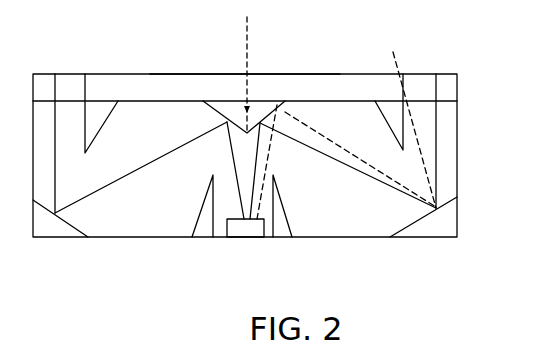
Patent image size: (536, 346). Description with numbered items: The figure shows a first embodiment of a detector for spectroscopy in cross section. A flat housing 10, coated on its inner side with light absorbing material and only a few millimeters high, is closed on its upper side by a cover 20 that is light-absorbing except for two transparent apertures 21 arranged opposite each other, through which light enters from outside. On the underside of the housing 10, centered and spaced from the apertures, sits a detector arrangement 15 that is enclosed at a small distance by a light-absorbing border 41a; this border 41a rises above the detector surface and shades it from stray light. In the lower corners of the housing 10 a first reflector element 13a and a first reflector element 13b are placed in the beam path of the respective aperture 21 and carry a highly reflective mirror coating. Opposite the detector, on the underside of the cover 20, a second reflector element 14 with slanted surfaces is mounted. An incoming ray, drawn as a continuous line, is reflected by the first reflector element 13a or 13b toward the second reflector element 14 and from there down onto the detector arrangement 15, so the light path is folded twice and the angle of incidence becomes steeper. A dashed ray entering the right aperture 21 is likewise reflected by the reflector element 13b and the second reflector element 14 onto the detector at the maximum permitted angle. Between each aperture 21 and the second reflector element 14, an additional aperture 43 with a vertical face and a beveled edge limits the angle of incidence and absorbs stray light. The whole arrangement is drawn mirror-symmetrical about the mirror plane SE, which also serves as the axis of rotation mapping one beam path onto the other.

The housing 10 is at (457, 157).
The first reflector element 13a is at (55, 232).
The first reflector element 13b is at (450, 231).
The second reflector element 14 is at (256, 115).
The detector arrangement 15 is at (241, 233).
The cover 20 is at (212, 74).
The aperture 21 is at (77, 74).
The border 41a is at (203, 233).
The additional aperture 43 is at (97, 117).
The mirror plane SE is at (247, 66).